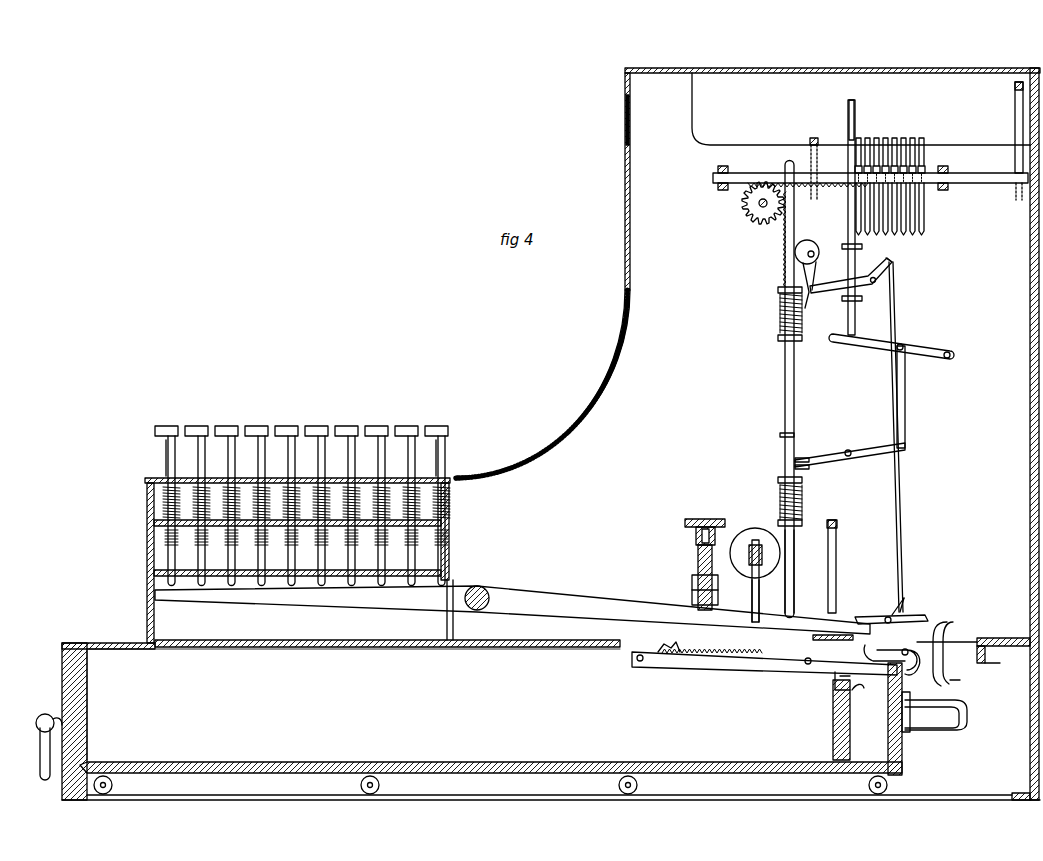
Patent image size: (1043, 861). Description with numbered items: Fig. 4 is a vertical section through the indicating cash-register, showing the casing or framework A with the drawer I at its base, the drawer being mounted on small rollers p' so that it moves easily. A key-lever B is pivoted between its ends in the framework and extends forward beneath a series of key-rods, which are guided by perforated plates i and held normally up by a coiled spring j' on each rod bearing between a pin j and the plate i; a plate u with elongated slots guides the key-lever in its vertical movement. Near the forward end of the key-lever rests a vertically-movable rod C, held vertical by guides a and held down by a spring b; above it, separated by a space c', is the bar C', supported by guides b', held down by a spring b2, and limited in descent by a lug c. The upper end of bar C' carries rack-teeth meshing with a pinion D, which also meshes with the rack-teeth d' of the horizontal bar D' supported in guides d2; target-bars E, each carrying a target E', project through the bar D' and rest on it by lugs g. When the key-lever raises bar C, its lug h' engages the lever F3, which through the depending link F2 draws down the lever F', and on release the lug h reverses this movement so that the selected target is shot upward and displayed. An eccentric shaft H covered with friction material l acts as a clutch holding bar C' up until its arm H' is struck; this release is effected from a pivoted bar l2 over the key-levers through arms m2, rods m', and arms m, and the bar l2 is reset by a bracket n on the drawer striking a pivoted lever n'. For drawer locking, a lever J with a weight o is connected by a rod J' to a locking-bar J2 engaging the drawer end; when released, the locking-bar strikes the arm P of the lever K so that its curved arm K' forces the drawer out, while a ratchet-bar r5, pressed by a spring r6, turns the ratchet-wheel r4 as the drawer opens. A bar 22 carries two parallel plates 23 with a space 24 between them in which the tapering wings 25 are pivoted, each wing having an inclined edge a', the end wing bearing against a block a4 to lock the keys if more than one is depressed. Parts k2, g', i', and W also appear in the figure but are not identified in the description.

The casing or framework A is at (624, 352).
The casing wall plate k2 is at (625, 114).
The small rollers p' is at (490, 785).
The drawer I is at (389, 704).
The perforated plates i is at (299, 539).
The pins or projections j is at (315, 503).
The coiled spring j' is at (319, 538).
The inclined edge a' is at (301, 420).
The guides a is at (501, 359).
The key-levers B is at (530, 592).
The horizontal bars D' is at (870, 167).
The guides d2 is at (722, 190).
The rack-teeth d' is at (808, 195).
The pinions D is at (754, 207).
The vertically-movable bars C' is at (806, 389).
The lug or ear c is at (771, 277).
The guides b' is at (777, 311).
The springs b2 is at (779, 308).
The space c' is at (789, 435).
The springs b is at (804, 502).
The vertically-movable rods or bars C is at (803, 571).
The eccentric shaft H is at (813, 246).
The arm H' is at (808, 296).
The rubber, leather, or similar material l is at (806, 240).
The target-bars E is at (879, 217).
The lugs or ears g is at (837, 120).
The brackets g' is at (844, 277).
The target E' is at (916, 158).
The bent lever i' is at (851, 275).
The arm m is at (904, 265).
The rods m' is at (907, 437).
The levers F' is at (891, 339).
The depending link F2 is at (906, 396).
The levers F3 is at (862, 458).
The lug or collar h is at (809, 446).
The lug or collar h' is at (817, 471).
The post W is at (836, 564).
The plate u is at (838, 523).
The depending wings 25 is at (698, 571).
The bar 22 is at (702, 518).
The space 24 is at (715, 520).
The parallel plates 23 is at (696, 535).
The block a4 is at (713, 597).
The lever J is at (755, 564).
The weight o is at (755, 553).
The rod or bar J' is at (762, 601).
The pivotally-supported bar l2 is at (891, 610).
The arms m2 is at (905, 612).
The ratchet-bar r5 is at (726, 662).
The ratchet-wheel r4 is at (668, 646).
The arm P is at (884, 643).
The lever K is at (904, 647).
The curved arm K' is at (939, 660).
The arm or bracket n is at (946, 711).
The pivoted lever n' is at (968, 675).
The locking-bar J2 is at (833, 678).
The spring r6 is at (862, 693).